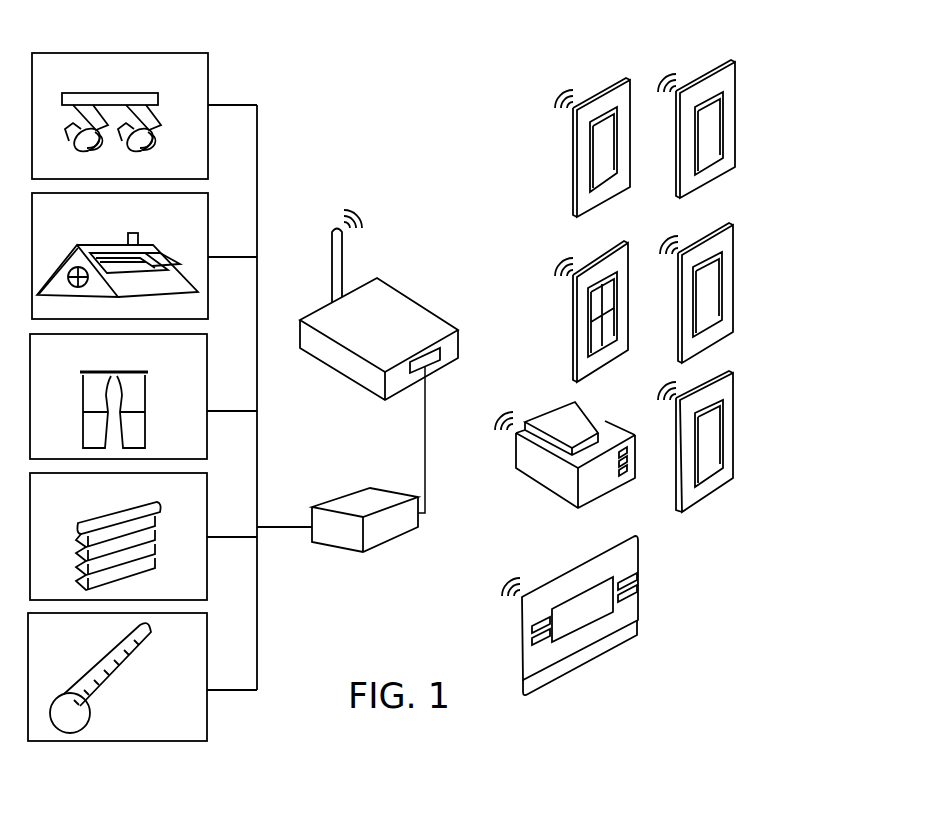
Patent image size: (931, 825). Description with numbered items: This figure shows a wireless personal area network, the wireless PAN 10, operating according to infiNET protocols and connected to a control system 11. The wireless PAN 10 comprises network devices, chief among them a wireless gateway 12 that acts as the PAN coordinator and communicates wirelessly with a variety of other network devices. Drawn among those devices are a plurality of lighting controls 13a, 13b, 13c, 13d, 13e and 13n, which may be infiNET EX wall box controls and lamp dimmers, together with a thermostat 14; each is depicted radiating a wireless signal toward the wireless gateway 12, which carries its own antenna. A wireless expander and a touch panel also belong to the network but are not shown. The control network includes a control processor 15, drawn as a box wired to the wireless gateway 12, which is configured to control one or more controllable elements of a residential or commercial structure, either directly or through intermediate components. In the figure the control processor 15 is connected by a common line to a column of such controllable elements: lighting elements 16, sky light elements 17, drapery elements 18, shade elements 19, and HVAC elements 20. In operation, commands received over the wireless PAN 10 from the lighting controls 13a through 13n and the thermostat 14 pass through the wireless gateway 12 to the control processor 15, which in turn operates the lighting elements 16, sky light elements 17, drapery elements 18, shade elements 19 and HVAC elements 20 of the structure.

The wireless PAN 10 is at (510, 75).
The control system 11 is at (325, 145).
The wireless gateway 12 is at (417, 312).
The lighting control 13a is at (607, 85).
The lighting control 13b is at (703, 72).
The lighting control 13c is at (607, 248).
The lighting control 13d is at (713, 226).
The lighting control 13e is at (590, 417).
The lighting control 13n is at (730, 373).
The thermostat 14 is at (580, 568).
The control processor 15 is at (377, 497).
The lighting elements 16 is at (158, 57).
The sky light elements 17 is at (200, 218).
The drapery elements 18 is at (197, 363).
The shade elements 19 is at (200, 503).
The HVAC elements 20 is at (200, 653).